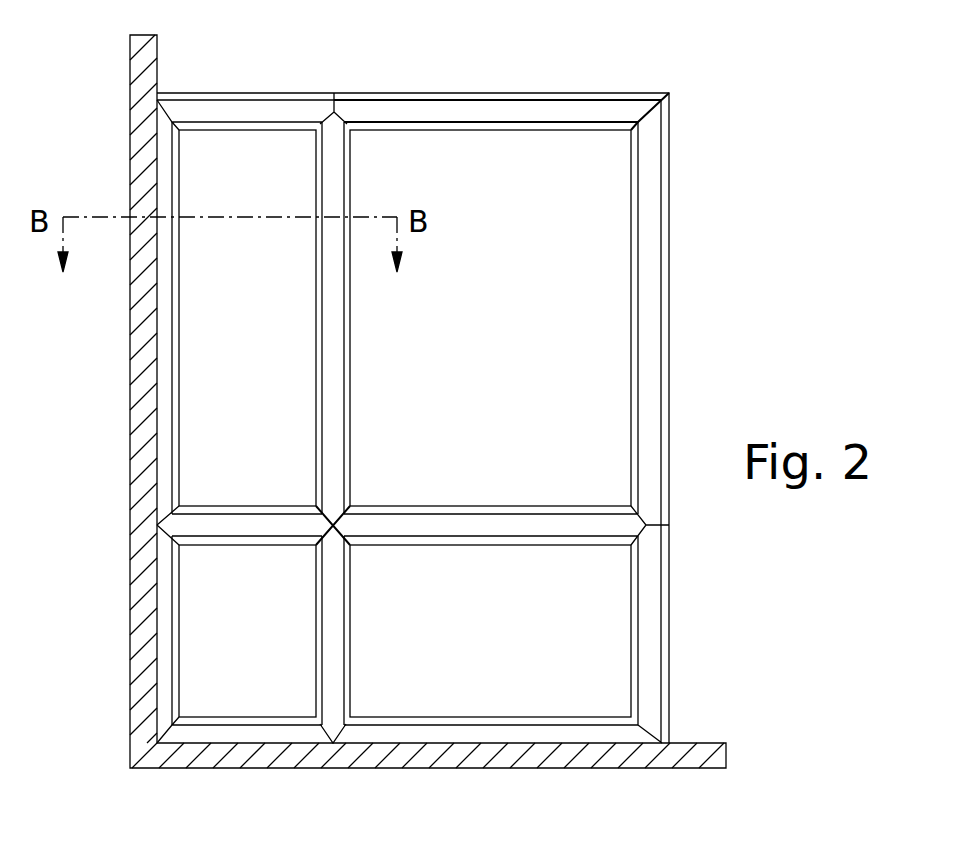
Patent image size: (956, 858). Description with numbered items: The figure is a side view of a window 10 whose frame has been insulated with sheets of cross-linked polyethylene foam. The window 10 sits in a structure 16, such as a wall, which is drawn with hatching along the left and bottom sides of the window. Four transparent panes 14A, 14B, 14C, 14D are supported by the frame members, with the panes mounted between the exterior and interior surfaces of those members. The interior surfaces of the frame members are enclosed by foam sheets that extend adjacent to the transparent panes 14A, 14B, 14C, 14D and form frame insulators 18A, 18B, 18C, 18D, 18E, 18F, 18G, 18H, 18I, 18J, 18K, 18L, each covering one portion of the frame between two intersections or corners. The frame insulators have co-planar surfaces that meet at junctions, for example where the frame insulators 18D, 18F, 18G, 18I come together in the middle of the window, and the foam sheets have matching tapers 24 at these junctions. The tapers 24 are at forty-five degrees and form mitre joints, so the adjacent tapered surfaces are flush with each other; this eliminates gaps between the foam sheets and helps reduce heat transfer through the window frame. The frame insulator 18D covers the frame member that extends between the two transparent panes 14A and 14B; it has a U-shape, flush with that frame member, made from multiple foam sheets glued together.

The window 10 is at (777, 128).
The structure 16 is at (130, 575).
The transparent window pane 14A is at (284, 177).
The transparent window pane 14B is at (530, 176).
The transparent window pane 14C is at (278, 636).
The transparent window pane 14D is at (533, 620).
The frame insulator 18A is at (260, 93).
The frame insulator 18B is at (510, 93).
The frame insulator 18C is at (180, 322).
The frame insulator 18D is at (352, 305).
The frame insulator 18E is at (670, 333).
The frame insulator 18F is at (213, 508).
The frame insulator 18G is at (503, 509).
The frame insulator 18H is at (182, 678).
The frame insulator 18I is at (357, 625).
The frame insulator 18J is at (668, 632).
The frame insulator 18K is at (235, 735).
The frame insulator 18L is at (517, 734).
The taper 24 is at (347, 522).